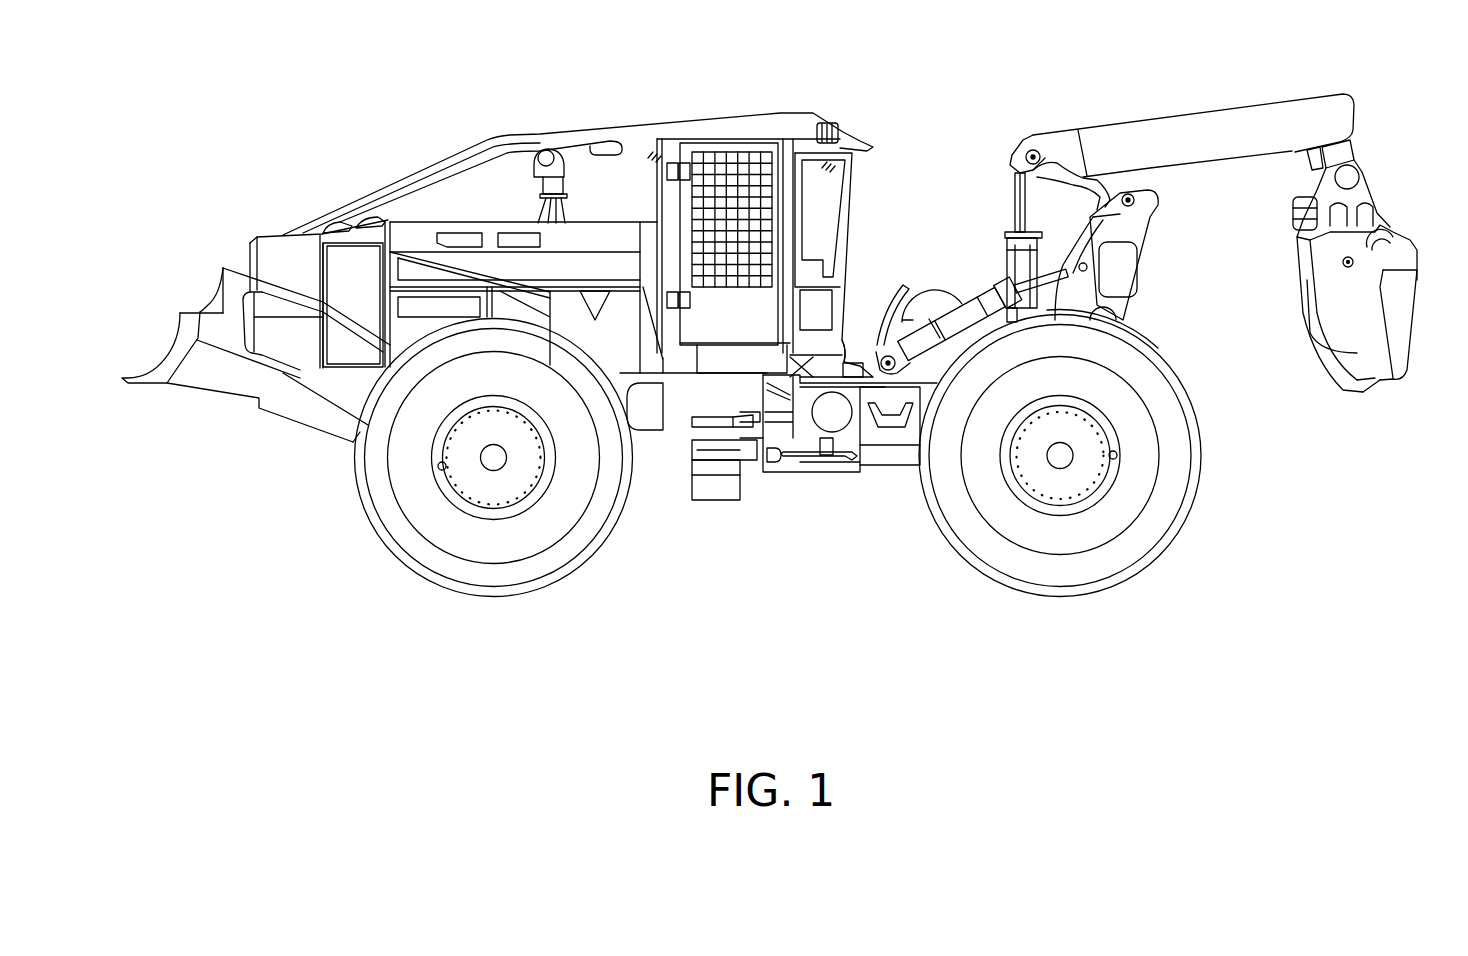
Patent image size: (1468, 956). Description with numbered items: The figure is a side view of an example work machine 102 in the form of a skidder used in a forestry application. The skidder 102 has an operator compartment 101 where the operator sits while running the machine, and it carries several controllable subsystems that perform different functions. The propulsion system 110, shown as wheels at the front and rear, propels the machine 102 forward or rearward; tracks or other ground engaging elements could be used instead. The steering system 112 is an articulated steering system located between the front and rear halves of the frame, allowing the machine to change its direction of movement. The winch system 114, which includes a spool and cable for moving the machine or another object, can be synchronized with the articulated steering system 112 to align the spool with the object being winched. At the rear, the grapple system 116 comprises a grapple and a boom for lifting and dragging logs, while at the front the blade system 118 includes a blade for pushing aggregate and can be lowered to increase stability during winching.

The operator compartment 101 is at (736, 150).
The work machine 102 is at (352, 160).
The propulsion system 110 is at (575, 580).
The steering system 112 is at (814, 474).
The winch system 114 is at (941, 278).
The grapple system 116 is at (1392, 226).
The blade system 118 is at (152, 347).